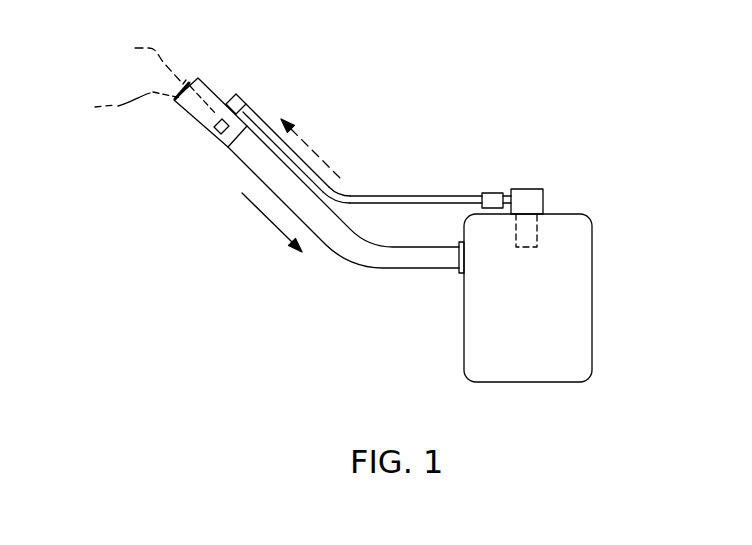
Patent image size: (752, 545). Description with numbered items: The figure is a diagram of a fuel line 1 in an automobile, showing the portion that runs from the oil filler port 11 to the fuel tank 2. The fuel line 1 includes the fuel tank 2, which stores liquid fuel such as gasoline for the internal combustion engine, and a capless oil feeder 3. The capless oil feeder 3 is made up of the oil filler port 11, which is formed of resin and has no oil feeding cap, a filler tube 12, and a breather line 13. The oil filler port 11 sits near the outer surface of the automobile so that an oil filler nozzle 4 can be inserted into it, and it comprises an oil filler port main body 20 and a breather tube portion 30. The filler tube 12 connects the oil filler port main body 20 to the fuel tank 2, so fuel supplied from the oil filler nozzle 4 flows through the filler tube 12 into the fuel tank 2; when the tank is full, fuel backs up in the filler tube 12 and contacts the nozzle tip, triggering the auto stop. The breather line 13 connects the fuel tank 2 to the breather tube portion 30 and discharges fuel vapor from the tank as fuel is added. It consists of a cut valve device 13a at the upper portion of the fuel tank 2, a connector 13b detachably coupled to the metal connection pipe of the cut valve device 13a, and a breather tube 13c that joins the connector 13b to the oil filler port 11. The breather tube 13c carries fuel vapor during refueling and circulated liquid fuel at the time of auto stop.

The fuel line 1 is at (552, 113).
The fuel tank 2 is at (592, 272).
The capless oil feeder 3 is at (362, 130).
The oil filler nozzle 4 is at (201, 80).
The oil filler port 11 is at (188, 111).
The filler tube 12 is at (366, 268).
The breather line 13 is at (403, 192).
The cut valve device 13a is at (544, 202).
The connector 13b is at (490, 190).
The breather tube 13c is at (356, 194).
The oil filler port main body 20 is at (220, 138).
The breather tube portion 30 is at (236, 93).